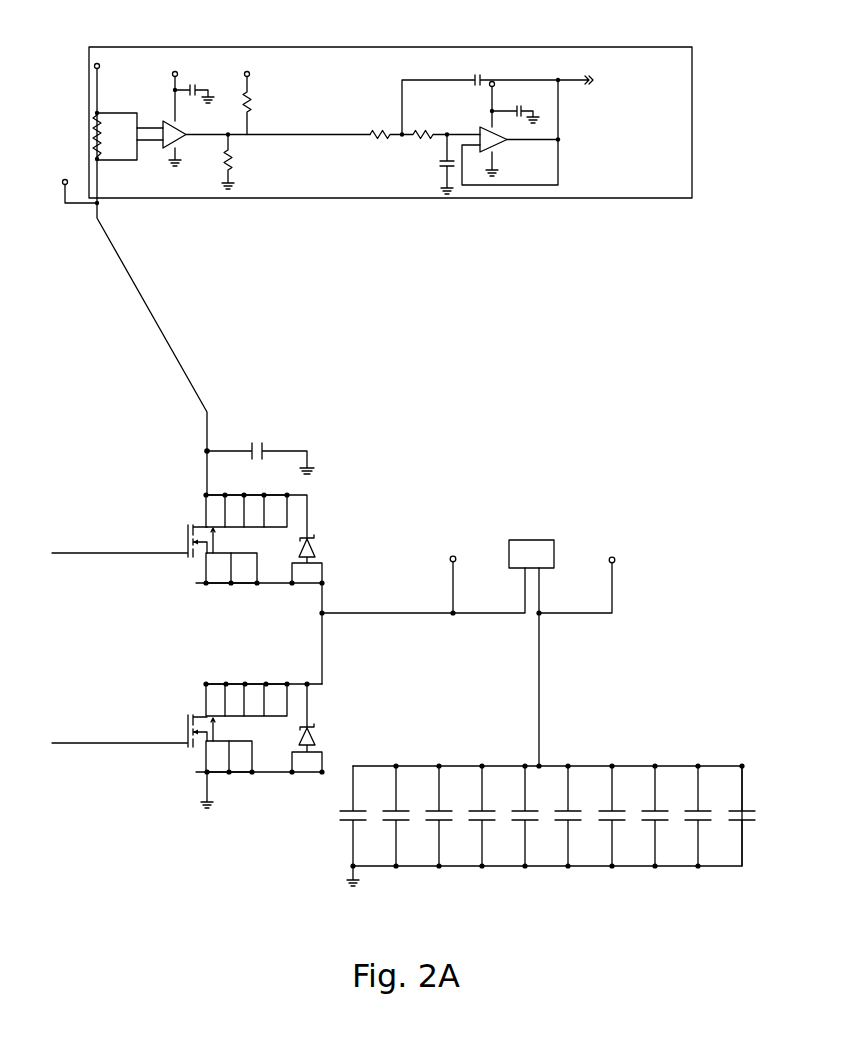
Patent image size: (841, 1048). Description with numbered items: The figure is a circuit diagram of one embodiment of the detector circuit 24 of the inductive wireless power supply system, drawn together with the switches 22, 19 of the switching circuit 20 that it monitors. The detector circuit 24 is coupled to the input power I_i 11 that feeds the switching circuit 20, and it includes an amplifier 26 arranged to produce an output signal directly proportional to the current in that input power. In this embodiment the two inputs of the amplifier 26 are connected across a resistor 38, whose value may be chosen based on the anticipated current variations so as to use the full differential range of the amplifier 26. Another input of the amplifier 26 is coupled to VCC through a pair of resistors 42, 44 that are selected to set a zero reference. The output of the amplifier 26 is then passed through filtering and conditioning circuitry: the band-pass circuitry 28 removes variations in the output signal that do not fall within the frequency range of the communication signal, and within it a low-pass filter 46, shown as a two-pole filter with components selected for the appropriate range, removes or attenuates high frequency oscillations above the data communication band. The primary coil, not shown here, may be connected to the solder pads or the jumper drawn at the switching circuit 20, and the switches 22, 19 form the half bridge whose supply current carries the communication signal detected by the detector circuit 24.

The input voltage terminal VIN 11 is at (97, 88).
The resistor 38 is at (98, 140).
The resistor 42 is at (245, 92).
The resistor 44 is at (228, 165).
The amplifier 26 is at (171, 183).
The low-pass filter 46 is at (429, 191).
The band-pass circuitry 28 is at (504, 173).
The detector circuit 24 is at (714, 128).
The switch 22 is at (187, 571).
The switch 19 is at (185, 757).
The switching circuit 20 is at (213, 848).